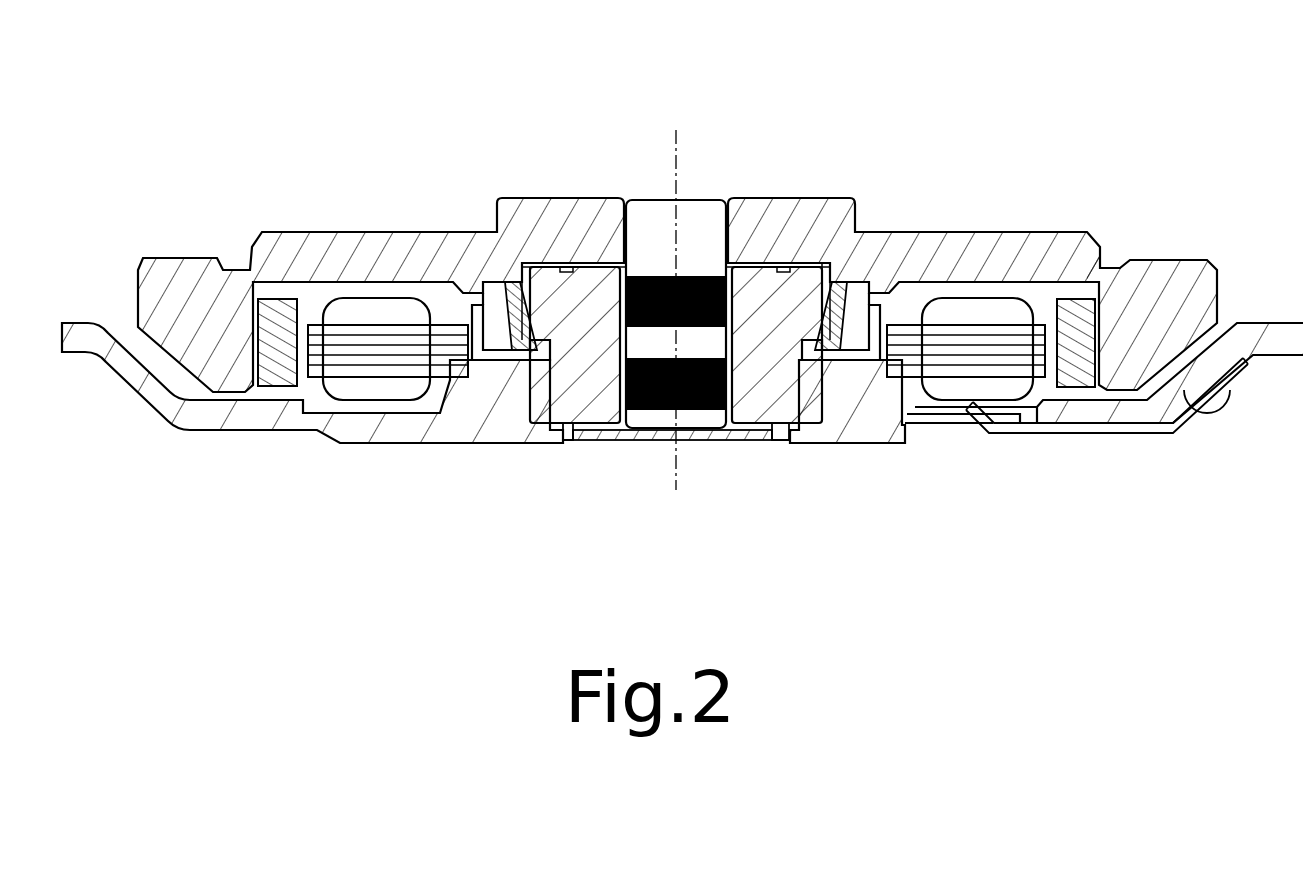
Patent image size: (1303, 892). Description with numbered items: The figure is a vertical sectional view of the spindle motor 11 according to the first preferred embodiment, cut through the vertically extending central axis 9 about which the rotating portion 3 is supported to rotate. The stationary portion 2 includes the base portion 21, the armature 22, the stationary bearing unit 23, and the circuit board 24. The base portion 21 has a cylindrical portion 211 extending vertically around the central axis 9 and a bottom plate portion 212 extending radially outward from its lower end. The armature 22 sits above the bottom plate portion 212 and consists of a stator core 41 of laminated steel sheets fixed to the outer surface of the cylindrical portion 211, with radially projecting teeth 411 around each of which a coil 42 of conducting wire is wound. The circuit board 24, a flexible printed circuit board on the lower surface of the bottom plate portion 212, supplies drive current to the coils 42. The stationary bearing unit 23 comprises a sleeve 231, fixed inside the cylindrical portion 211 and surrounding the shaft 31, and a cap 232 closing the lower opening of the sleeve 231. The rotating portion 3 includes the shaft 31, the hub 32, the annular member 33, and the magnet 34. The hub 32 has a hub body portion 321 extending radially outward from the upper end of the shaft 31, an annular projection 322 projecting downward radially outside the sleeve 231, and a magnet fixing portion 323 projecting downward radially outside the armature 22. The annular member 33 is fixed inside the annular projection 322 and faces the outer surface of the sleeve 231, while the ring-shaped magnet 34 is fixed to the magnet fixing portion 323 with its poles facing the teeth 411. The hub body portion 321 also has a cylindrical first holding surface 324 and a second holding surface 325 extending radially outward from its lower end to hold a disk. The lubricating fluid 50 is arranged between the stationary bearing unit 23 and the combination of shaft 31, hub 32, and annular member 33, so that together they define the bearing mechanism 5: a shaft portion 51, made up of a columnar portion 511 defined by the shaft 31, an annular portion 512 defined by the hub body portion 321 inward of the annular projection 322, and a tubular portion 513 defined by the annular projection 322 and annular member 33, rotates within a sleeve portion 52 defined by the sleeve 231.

The spindle motor 11 is at (295, 125).
The stationary portion 2 is at (104, 449).
The base portion 21 is at (391, 460).
The cylindrical portion 211 is at (517, 387).
The bottom plate portion 212 is at (252, 417).
The rotating portion 3 is at (852, 161).
The hub 32 is at (272, 212).
The hub body portion 321 is at (353, 265).
The annular projection 322 is at (497, 313).
The magnet fixing portion 323 is at (223, 337).
The first holding surface 324 is at (1103, 250).
The second holding surface 325 is at (1180, 258).
The annular member 33 is at (513, 292).
The magnet 34 is at (1072, 307).
The armature 22 is at (1002, 184).
The stator core 41 is at (911, 301).
The teeth 411 is at (1005, 332).
The coils 42 is at (958, 310).
The bearing mechanism 5 is at (719, 459).
The stationary bearing unit 23 is at (565, 512).
The sleeve 231 is at (590, 400).
The cap 232 is at (655, 435).
The circuit board 24 is at (1080, 430).
The lubricating fluid 50 is at (803, 215).
The shaft portion 51 is at (611, 159).
The columnar portion 511 is at (676, 314).
The annular portion 512 is at (575, 217).
The tubular portion 513 is at (487, 182).
The sleeve portion 52 is at (762, 407).
The shaft 31 is at (702, 217).
The central axis 9 is at (676, 145).